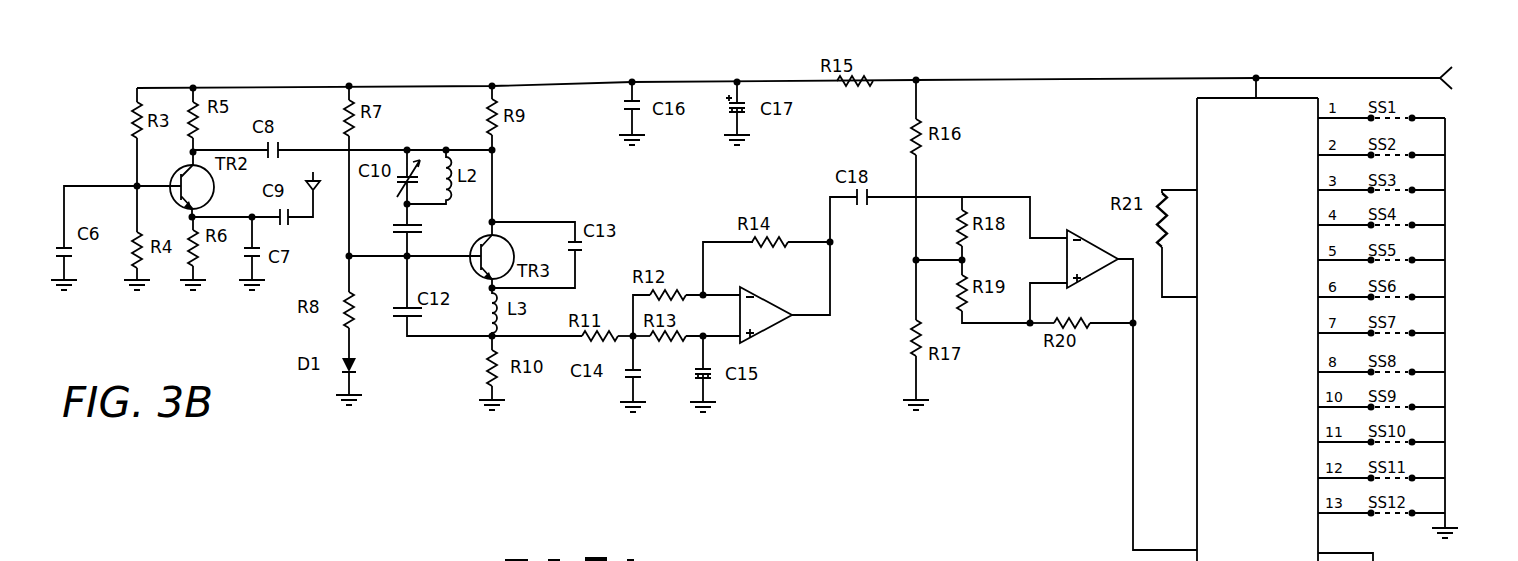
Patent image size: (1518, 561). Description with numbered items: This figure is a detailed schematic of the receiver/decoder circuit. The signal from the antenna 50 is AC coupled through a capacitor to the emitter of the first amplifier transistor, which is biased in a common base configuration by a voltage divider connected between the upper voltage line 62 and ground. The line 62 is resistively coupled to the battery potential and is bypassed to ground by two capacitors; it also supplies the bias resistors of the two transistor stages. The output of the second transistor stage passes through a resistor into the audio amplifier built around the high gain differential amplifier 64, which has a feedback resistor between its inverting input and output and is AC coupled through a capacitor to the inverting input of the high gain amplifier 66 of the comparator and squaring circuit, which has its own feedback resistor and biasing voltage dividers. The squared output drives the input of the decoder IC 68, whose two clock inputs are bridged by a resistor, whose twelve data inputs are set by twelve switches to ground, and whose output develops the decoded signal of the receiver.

The antenna 50 is at (287, 188).
The line 62 is at (396, 87).
The high gain differential amplifier 64 is at (765, 342).
The high gain amplifier 66 is at (1095, 231).
The decoder IC 68 is at (1197, 126).